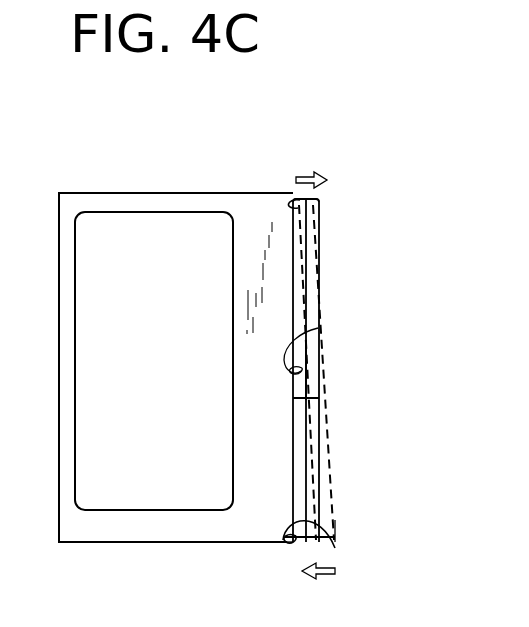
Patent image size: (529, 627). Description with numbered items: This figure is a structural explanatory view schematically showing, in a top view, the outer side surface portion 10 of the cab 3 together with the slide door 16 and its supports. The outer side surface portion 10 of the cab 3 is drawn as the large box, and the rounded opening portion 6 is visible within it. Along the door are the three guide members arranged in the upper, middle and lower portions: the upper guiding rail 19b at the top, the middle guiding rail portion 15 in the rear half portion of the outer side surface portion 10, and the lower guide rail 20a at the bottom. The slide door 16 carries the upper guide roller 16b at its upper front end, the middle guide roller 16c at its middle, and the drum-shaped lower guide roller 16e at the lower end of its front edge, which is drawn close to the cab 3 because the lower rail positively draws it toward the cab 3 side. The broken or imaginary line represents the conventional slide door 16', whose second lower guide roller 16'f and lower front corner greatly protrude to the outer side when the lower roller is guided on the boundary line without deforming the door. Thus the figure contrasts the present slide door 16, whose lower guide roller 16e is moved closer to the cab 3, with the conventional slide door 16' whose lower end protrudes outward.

The cab 3 is at (112, 162).
The opening 6 is at (161, 367).
The slide door 16 is at (329, 370).
The slide door 16' is at (354, 373).
The upper guide roller 16b is at (312, 200).
The middle guide roller 16c is at (318, 328).
The lower guide roller 16e is at (326, 530).
The second lower guide roller 16'f is at (246, 563).
The upper guiding rail 19b is at (292, 199).
The middle guiding rail portion 15 is at (302, 368).
The outer side surface portion 10 is at (293, 398).
The guide rail 20a is at (335, 548).